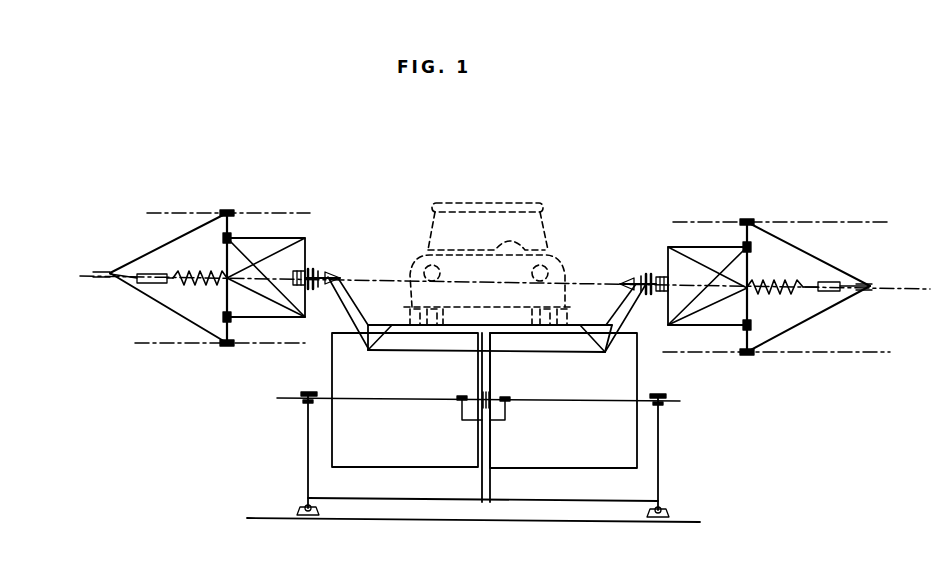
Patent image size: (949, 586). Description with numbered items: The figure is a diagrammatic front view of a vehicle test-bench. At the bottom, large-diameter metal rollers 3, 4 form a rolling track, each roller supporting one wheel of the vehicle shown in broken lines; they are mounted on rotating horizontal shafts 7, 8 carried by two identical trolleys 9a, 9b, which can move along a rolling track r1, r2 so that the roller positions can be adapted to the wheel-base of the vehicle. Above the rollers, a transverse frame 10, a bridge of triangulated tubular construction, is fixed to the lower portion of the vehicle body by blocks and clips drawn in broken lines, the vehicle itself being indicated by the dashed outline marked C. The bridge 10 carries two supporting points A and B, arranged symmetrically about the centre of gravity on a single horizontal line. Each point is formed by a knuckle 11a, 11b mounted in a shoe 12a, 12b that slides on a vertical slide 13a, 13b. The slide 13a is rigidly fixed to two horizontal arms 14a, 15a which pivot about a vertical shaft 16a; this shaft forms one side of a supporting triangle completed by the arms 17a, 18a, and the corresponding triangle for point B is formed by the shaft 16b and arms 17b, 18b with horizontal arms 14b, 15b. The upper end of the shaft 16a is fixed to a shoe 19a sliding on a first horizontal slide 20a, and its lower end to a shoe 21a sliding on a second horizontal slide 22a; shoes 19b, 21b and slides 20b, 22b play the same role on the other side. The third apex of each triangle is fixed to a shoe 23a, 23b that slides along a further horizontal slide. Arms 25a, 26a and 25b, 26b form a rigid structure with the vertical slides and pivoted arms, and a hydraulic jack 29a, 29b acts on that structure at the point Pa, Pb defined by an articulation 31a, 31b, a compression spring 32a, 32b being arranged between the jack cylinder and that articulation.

The metal roller 3 is at (393, 457).
The metal roller 4 is at (562, 455).
The rotating horizontal shaft 7 is at (304, 402).
The rotating horizontal shaft 8 is at (664, 404).
The trolley 9a is at (428, 502).
The trolley 9b is at (428, 502).
The transverse frame 10 is at (383, 325).
The knuckle 11a is at (338, 275).
The knuckle 11b is at (640, 282).
The shoe 12a is at (313, 270).
The shoe 12b is at (657, 280).
The vertical slide 13a is at (320, 293).
The vertical slide 13b is at (664, 300).
The horizontal arm 14a is at (276, 237).
The horizontal arm 14b is at (668, 244).
The horizontal arm 15a is at (302, 320).
The horizontal arm 15b is at (678, 333).
The pivotal shaft 16a is at (222, 252).
The pivotal shaft 16b is at (767, 262).
The arm of supporting triangle 17a is at (147, 253).
The arm of supporting triangle 17b is at (843, 275).
The arm of supporting triangle 18a is at (148, 342).
The arm of supporting triangle 18b is at (852, 310).
The shoe 19a is at (228, 210).
The shoe 19b is at (748, 219).
The first horizontal slide 20a is at (168, 212).
The first horizontal slide 20b is at (829, 222).
The shoe 21a is at (226, 348).
The shoe 21b is at (752, 356).
The second horizontal slide 22a is at (146, 346).
The second horizontal slide 22b is at (832, 352).
The shoe 23a is at (107, 270).
The shoe 23b is at (872, 284).
The arm 25a is at (301, 242).
The arm 25b is at (668, 256).
The arm 26a is at (262, 298).
The arm 26b is at (722, 312).
The hydraulic jack 29a is at (140, 290).
The hydraulic jack 29b is at (845, 292).
The articulation 31a is at (212, 308).
The articulation 31b is at (770, 317).
The compression spring 32a is at (142, 300).
The compression spring 32b is at (788, 298).
The action point of the jack Pa is at (212, 308).
The action point of the jack Pb is at (770, 317).
The supporting point A is at (338, 275).
The supporting point B is at (640, 282).
The load (vehicle) C is at (486, 290).
The rolling track r1 is at (302, 509).
The rolling track r2 is at (667, 512).